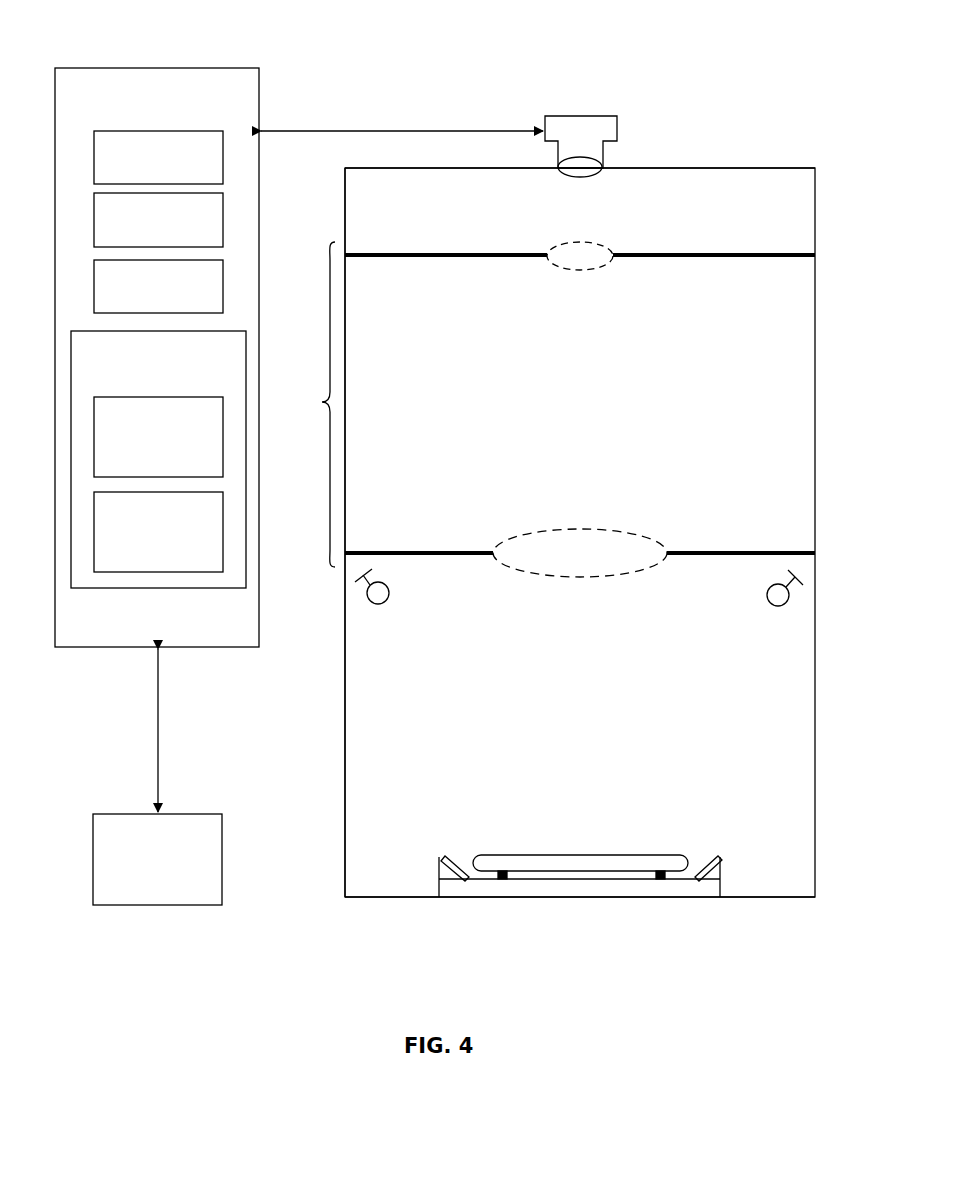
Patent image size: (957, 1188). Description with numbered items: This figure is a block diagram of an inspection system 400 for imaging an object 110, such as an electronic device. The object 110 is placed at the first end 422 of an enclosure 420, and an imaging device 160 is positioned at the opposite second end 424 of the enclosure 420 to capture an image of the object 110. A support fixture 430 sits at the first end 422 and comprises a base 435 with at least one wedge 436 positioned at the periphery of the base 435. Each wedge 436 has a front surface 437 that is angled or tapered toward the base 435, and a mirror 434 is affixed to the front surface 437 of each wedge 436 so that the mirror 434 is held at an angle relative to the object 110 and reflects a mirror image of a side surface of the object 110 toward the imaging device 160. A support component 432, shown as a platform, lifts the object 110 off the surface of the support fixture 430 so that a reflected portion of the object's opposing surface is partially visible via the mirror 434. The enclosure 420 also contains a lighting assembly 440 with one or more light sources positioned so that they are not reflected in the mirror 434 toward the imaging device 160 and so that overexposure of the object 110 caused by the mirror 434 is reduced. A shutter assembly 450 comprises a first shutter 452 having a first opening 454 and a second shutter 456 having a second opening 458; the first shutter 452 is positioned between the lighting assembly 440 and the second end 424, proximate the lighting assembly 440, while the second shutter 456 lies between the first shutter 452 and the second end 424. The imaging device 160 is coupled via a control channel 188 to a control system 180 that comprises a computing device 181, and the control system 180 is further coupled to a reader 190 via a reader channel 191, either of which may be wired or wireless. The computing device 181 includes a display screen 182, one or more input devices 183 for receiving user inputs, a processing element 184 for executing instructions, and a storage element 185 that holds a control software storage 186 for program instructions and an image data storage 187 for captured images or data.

The object 110 is at (608, 855).
The imaging device 160 is at (570, 116).
The control system 180 is at (130, 68).
The computing device 181 is at (158, 97).
The display screen 182 is at (158, 157).
The input devices 183 is at (158, 220).
The processing element 184 is at (158, 286).
The storage element 185 is at (158, 459).
The control software storage 186 is at (158, 437).
The image data storage 187 is at (158, 532).
The control channel 188 is at (415, 131).
The reader 190 is at (157, 859).
The reader channel 191 is at (158, 758).
The inspection system 400 is at (212, 940).
The enclosure 420 is at (727, 168).
The first end 422 is at (407, 897).
The second end 424 is at (660, 168).
The support fixture 430 is at (635, 897).
The support component 432 is at (505, 872).
The mirror 434 is at (455, 856).
The base 435 is at (525, 888).
The wedge 436 is at (712, 872).
The front surface 437 is at (724, 852).
The lighting assembly 440 is at (367, 598).
The shutter assembly 450 is at (312, 404).
The first shutter 452 is at (745, 553).
The first opening 454 is at (531, 534).
The second shutter 456 is at (748, 254).
The second opening 458 is at (566, 245).